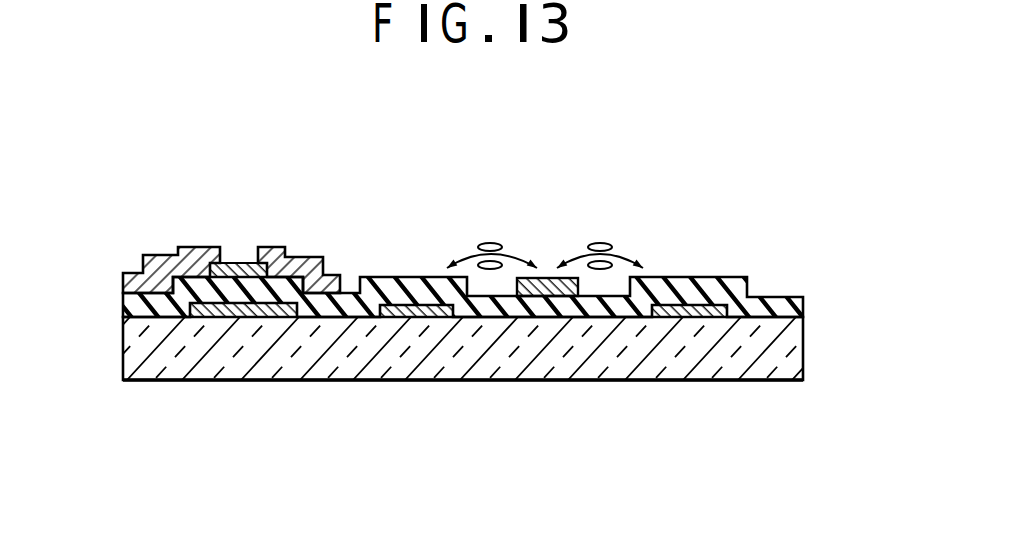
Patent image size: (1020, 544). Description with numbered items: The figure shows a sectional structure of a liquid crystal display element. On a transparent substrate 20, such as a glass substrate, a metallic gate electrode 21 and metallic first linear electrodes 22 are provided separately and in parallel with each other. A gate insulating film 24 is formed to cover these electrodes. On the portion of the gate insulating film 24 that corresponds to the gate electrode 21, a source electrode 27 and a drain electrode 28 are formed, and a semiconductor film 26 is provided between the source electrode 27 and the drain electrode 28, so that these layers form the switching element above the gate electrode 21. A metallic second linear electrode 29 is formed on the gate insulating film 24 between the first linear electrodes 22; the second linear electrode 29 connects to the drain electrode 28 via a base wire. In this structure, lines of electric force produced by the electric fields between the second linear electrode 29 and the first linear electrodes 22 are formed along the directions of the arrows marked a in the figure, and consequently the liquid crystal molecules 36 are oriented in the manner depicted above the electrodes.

The transparent substrate 20 is at (782, 358).
The gate electrode 21 is at (243, 310).
The first linear electrodes 22 is at (427, 308).
The gate insulating film 24 is at (790, 308).
The semiconductor film 26 is at (238, 266).
The source electrode 27 is at (192, 260).
The drain electrode 28 is at (273, 255).
The second linear electrode 29 is at (548, 278).
The liquid crystal molecules 36 is at (492, 243).